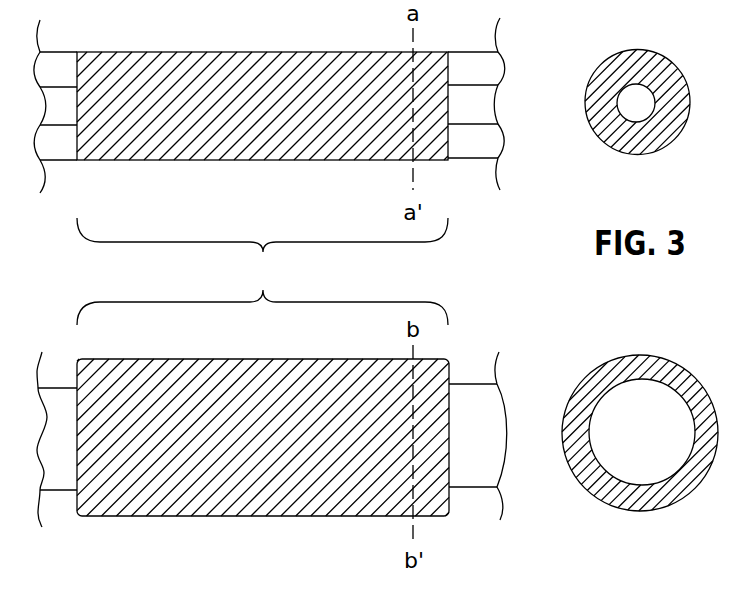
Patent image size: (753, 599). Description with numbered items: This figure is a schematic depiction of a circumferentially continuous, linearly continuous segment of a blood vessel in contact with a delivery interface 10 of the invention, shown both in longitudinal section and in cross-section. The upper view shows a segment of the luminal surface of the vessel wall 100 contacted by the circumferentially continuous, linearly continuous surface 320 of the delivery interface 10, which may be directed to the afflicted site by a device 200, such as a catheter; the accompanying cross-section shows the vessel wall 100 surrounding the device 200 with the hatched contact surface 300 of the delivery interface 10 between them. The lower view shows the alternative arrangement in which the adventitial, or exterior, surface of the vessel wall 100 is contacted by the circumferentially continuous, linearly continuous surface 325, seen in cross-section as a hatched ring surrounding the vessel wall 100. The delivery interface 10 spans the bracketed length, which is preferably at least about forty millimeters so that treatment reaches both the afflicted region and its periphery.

The delivery interface 10 is at (262, 271).
The vessel wall 100 is at (290, 50).
The device 200 is at (57, 79).
The circumferentially non-continuous, linearly continuous surface 300 is at (643, 53).
The circumferentially continuous, linearly continuous surface 320 is at (139, 82).
The circumferentially continuous, linearly continuous surface 325 is at (146, 372).